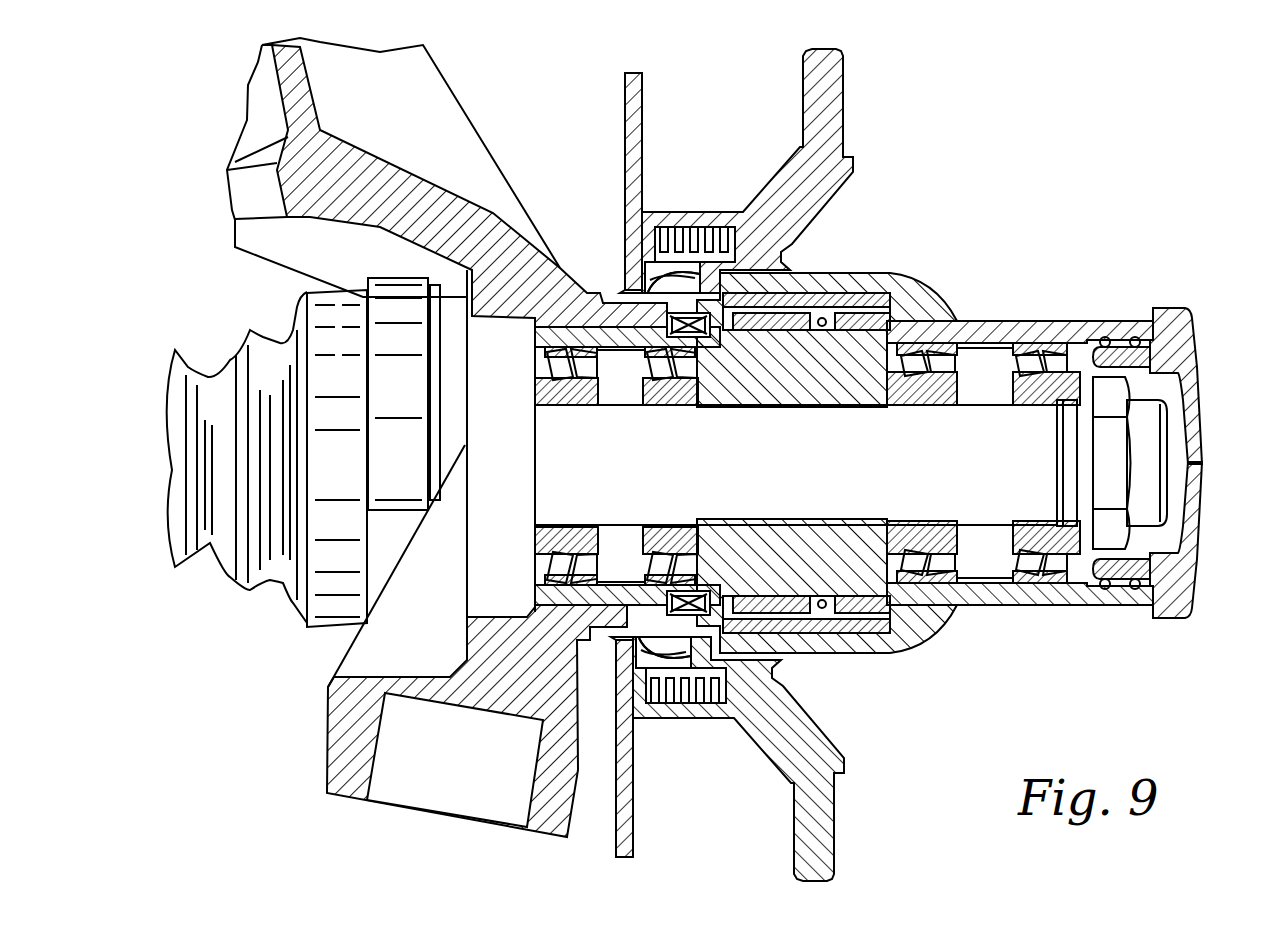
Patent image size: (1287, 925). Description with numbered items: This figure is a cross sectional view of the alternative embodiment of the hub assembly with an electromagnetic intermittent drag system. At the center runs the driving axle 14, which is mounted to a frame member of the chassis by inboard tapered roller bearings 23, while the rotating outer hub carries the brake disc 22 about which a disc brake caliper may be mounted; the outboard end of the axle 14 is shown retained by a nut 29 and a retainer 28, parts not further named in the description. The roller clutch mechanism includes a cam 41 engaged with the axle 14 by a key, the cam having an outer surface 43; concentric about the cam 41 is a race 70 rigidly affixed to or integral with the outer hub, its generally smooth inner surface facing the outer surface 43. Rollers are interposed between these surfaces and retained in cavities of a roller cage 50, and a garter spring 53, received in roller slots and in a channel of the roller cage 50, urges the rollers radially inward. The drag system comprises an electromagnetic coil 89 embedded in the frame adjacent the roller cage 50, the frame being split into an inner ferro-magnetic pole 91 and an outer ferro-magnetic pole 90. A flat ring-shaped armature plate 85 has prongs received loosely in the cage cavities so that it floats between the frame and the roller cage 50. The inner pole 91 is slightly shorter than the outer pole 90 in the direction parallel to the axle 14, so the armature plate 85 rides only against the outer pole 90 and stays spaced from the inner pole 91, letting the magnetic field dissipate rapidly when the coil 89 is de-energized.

The driving axle 14 is at (252, 199).
The brake disc 22 is at (643, 100).
The inboard tapered roller bearings 23 is at (565, 395).
The nut retainer cap 28 is at (1147, 493).
The spindle nut 29 is at (1085, 460).
The cam 41 is at (840, 390).
The outer surface 43 is at (787, 390).
The roller cage 50 is at (773, 560).
The garter spring 53 is at (813, 570).
The race 70 is at (820, 627).
The armature plate 85 is at (700, 357).
The electromagnetic coil 89 is at (717, 287).
The outer ferro-magnetic pole 90 is at (700, 547).
The inner ferro-magnetic pole 91 is at (703, 623).